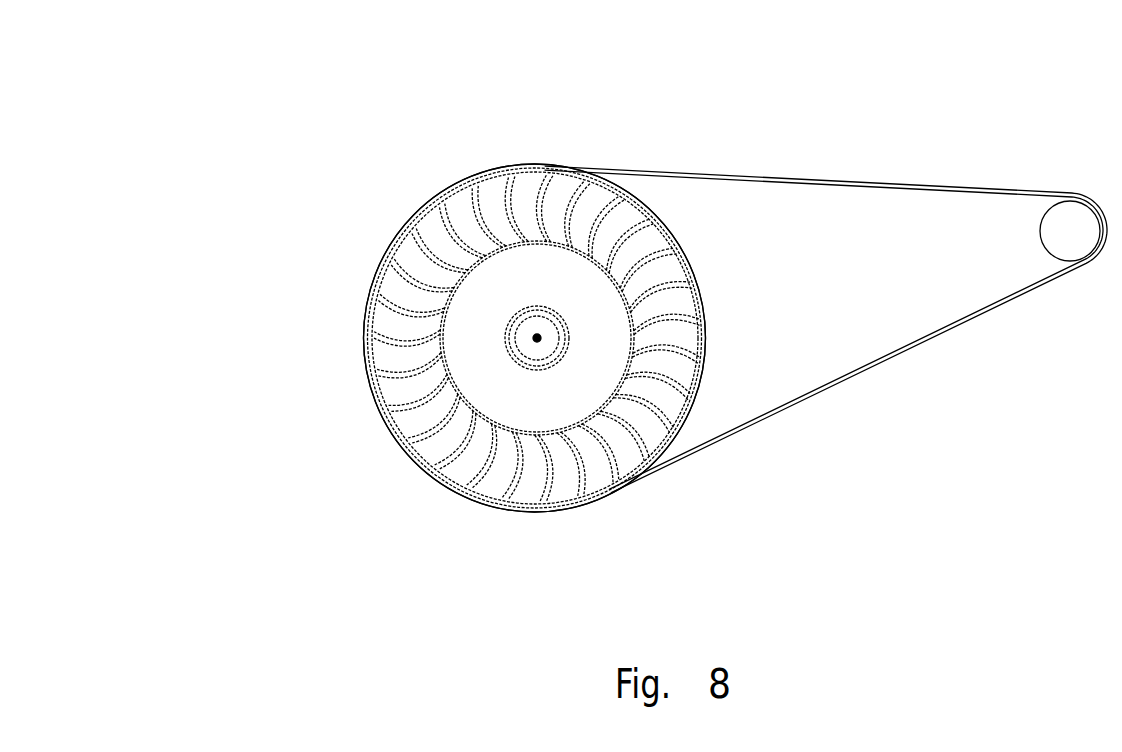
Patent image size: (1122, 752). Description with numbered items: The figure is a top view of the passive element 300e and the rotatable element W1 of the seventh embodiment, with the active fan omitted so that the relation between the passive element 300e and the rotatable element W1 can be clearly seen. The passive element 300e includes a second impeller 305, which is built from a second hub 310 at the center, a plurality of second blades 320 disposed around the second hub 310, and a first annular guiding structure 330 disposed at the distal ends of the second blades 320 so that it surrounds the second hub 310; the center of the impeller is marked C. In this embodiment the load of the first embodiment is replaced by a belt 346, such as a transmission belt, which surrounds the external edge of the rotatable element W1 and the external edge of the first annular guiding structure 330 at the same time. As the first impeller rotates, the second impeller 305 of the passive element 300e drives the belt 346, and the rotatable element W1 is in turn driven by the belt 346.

The passive element 300e is at (378, 146).
The belt 346 is at (813, 178).
The rotatable element W1 is at (1070, 218).
The second impeller 305 is at (246, 275).
The first annular guiding structure 330 is at (378, 282).
The second blades 320 is at (385, 337).
The second hub 310 is at (462, 352).
The center axis C is at (537, 342).